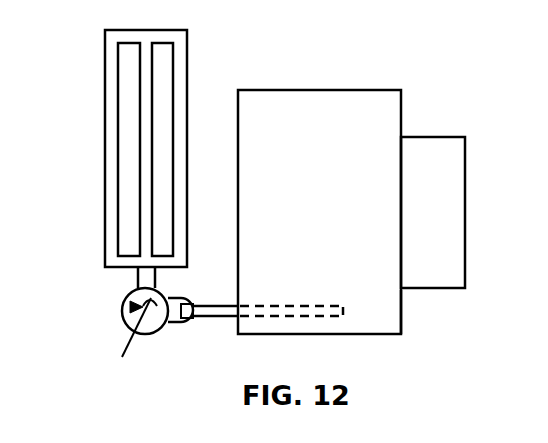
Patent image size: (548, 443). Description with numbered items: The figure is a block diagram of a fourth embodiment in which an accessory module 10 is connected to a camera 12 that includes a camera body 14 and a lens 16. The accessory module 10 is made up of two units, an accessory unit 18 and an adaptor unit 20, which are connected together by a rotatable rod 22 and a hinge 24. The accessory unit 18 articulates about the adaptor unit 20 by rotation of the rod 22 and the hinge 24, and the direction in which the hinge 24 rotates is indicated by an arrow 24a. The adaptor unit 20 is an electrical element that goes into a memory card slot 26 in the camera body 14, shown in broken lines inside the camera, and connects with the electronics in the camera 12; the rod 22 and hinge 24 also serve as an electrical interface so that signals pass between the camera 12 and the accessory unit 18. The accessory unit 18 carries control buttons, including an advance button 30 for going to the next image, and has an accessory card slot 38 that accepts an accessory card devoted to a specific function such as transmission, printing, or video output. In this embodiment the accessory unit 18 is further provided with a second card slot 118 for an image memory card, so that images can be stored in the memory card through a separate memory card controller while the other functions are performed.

The accessory module 10 is at (227, 60).
The camera 12 is at (380, 71).
The camera body 14 is at (402, 306).
The lens 16 is at (423, 137).
The accessory unit 18 is at (102, 52).
The adaptor unit 20 is at (200, 305).
The rotatable rod 22 is at (197, 324).
The hinge 24 is at (116, 311).
The arrow 24a is at (122, 357).
The memory card slot 26 is at (272, 303).
The advance button 30 is at (509, 9).
The accessory card slot 38 is at (160, 162).
The second card slot 118 is at (130, 148).